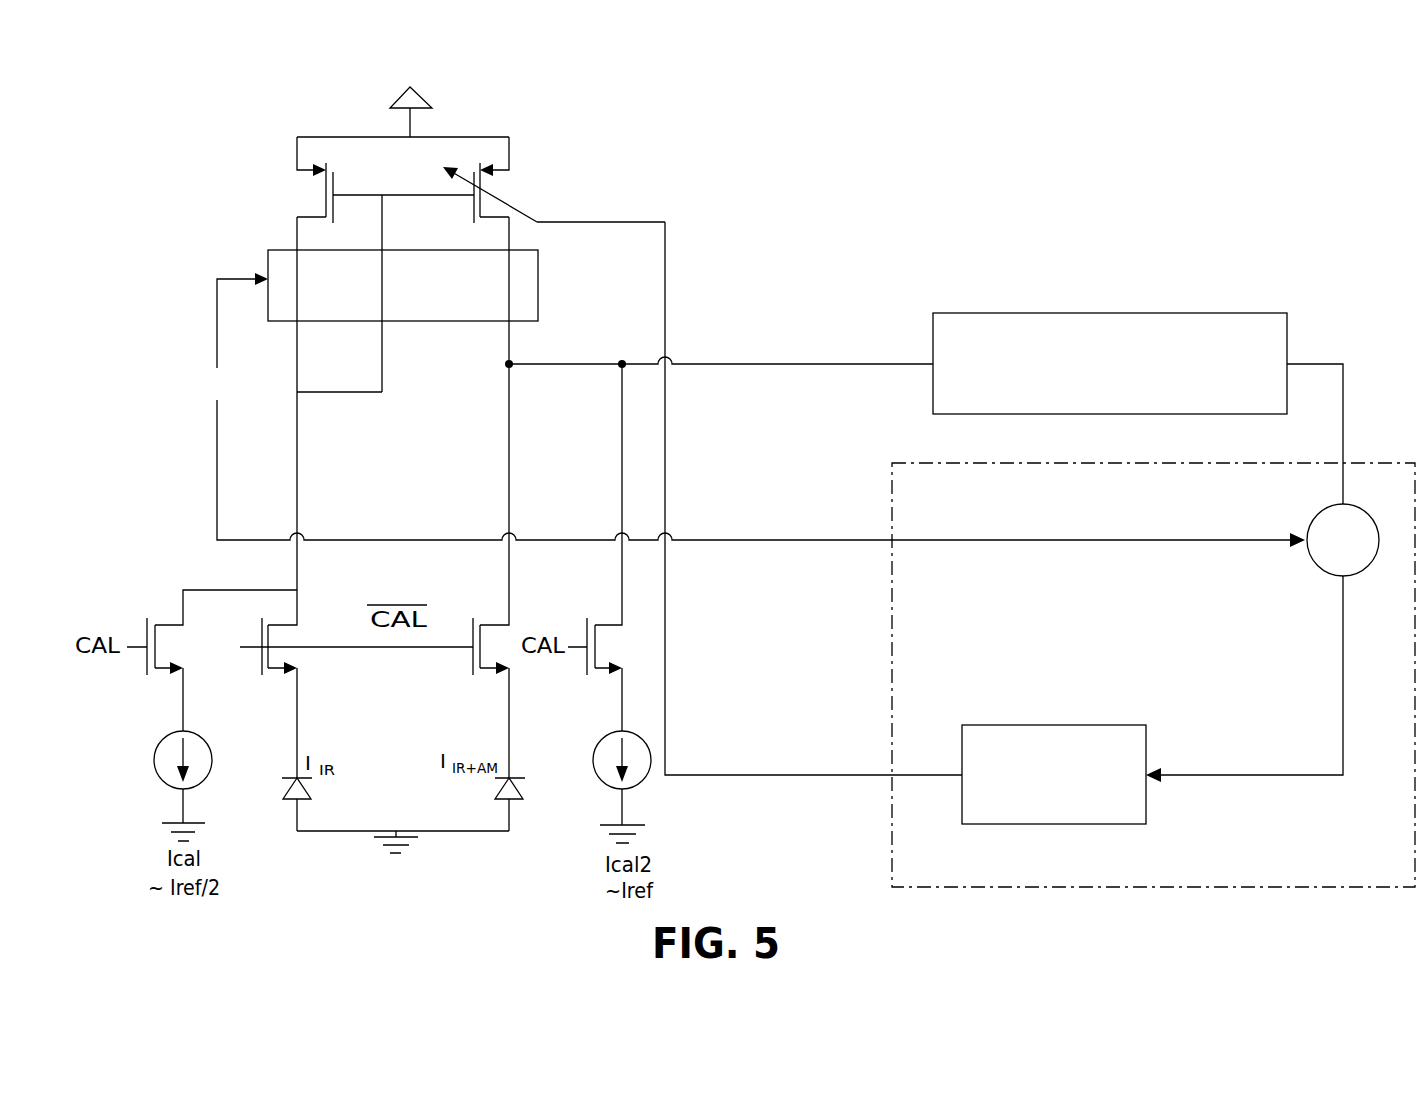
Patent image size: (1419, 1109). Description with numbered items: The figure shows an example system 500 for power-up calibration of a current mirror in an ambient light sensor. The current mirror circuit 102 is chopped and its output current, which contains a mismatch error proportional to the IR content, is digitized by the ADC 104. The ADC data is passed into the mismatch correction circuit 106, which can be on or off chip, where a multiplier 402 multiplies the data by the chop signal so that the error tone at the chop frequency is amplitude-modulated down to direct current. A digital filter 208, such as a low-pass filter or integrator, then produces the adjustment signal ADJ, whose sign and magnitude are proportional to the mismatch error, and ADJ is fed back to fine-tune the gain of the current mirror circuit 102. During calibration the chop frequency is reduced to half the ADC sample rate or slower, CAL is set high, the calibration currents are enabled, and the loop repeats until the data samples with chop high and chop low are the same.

The current mirror circuit 102 is at (549, 121).
The system for power-up calibration 500 is at (1299, 124).
The ADC 104 is at (1258, 313).
The mismatch correction circuit 106 is at (888, 460).
The multiplier 402 is at (1322, 512).
The digital filter 208 is at (1090, 725).